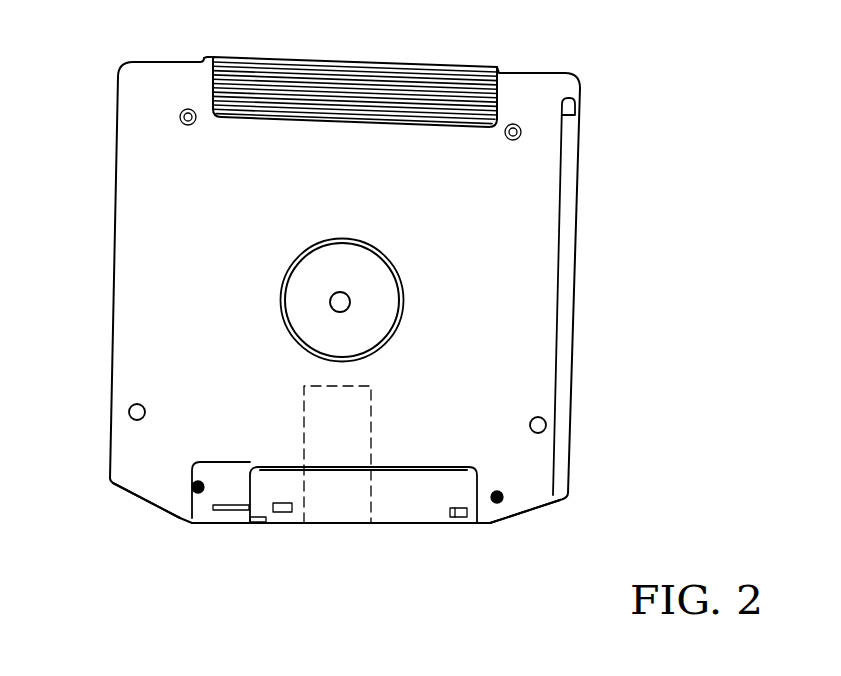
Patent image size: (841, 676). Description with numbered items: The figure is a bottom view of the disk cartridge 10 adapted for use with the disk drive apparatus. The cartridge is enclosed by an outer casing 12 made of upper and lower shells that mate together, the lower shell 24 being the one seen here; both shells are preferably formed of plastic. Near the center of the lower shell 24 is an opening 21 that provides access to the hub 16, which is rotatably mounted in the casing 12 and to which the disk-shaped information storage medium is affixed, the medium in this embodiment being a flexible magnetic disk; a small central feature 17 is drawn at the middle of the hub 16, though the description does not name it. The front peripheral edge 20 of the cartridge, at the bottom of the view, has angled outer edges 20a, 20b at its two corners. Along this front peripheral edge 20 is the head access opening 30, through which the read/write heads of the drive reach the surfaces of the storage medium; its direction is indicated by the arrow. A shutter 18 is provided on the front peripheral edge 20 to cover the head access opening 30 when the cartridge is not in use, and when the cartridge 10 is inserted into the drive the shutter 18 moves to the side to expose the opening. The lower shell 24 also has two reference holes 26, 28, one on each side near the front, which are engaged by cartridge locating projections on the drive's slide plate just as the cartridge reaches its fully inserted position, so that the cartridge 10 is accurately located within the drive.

The disk cartridge 10 is at (97, 66).
The outer casing 12 is at (112, 302).
The hub 16 is at (327, 260).
The hub center hole 17 is at (337, 296).
The shutter 18 is at (405, 497).
The front peripheral edge 20 is at (227, 520).
The angled outer edge 20a is at (137, 497).
The angled outer edge 20b is at (515, 517).
The opening 21 is at (393, 262).
The lower shell 24 is at (537, 98).
The reference hole 26 is at (537, 418).
The reference hole 28 is at (131, 404).
The head access opening 30 is at (341, 537).